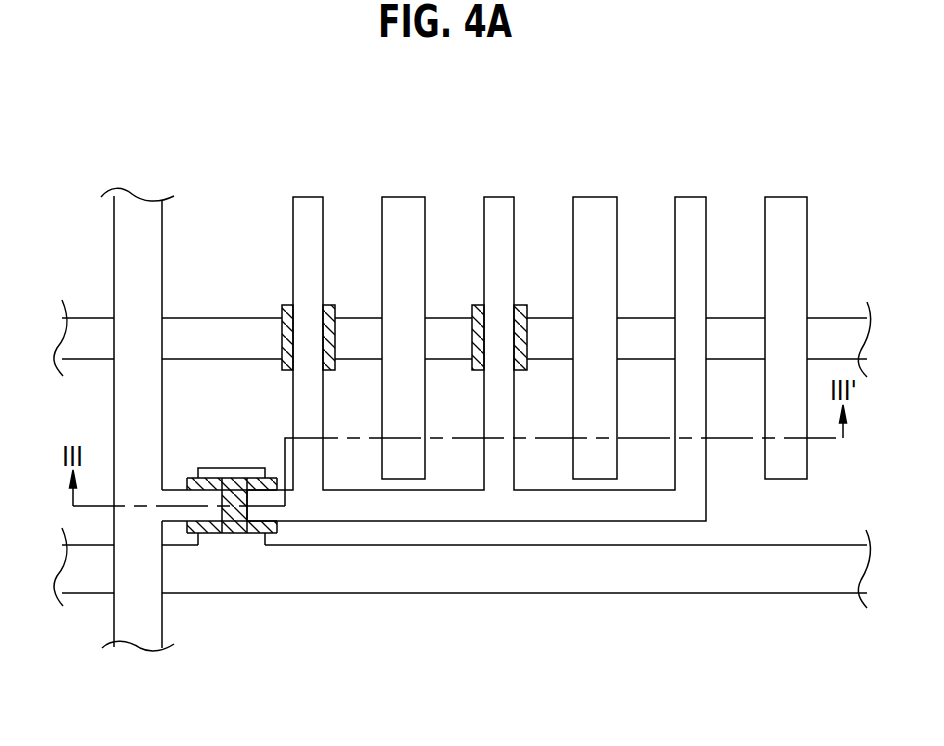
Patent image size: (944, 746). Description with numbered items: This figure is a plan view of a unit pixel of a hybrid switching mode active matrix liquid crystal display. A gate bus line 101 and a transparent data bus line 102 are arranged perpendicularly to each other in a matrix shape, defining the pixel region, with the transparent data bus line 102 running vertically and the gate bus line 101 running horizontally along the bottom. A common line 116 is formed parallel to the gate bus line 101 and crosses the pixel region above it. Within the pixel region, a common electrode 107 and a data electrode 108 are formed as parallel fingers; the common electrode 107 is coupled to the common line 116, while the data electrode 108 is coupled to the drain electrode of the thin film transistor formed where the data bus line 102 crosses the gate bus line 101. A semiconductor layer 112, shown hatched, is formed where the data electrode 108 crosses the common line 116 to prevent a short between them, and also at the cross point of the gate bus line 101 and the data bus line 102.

The gate bus line 101 is at (545, 580).
The transparent data bus line 102 is at (122, 249).
The common electrode 107 is at (408, 203).
The data electrode 108 is at (498, 203).
The semiconductor layer 112 is at (285, 306).
The common line 116 is at (832, 325).